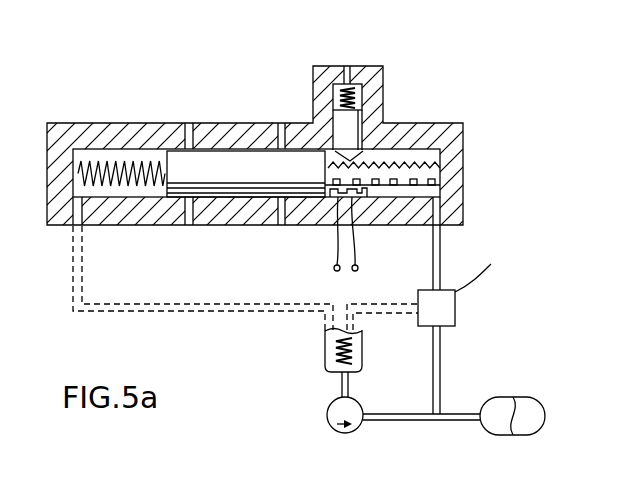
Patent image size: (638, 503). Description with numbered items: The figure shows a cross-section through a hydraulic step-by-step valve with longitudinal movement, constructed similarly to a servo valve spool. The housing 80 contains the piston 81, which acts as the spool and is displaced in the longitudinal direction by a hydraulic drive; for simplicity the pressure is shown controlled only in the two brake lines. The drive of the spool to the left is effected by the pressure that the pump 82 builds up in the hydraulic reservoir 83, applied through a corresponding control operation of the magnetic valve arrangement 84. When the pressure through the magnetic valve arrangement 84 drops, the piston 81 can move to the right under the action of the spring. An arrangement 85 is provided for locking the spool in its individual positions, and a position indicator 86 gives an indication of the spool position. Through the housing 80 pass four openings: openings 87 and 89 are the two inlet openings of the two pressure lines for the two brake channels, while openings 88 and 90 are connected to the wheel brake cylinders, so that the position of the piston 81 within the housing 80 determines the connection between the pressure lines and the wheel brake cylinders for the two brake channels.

The housing 80 is at (455, 144).
The piston 81 is at (188, 163).
The pump 82 is at (327, 418).
The hydraulic reservoir 83 is at (520, 397).
The magnetic valve arrangement 84 is at (457, 308).
The locking arrangement 85 is at (358, 100).
The position indicator 86 is at (367, 198).
The inlet opening 87 is at (280, 232).
The opening 88 is at (193, 239).
The inlet opening 89 is at (279, 120).
The opening 90 is at (193, 112).